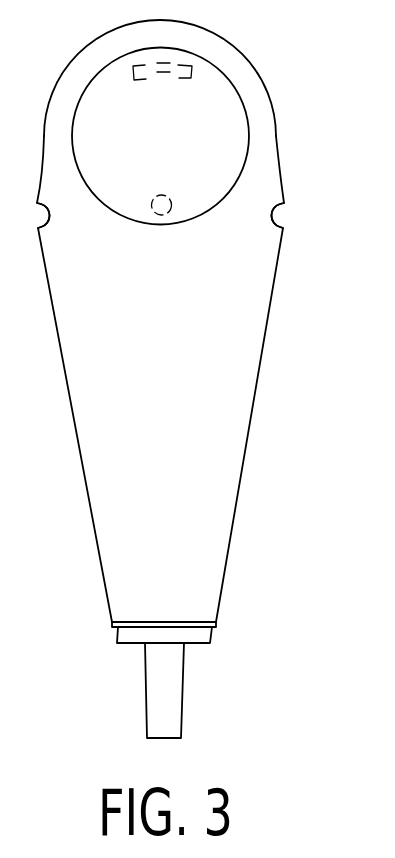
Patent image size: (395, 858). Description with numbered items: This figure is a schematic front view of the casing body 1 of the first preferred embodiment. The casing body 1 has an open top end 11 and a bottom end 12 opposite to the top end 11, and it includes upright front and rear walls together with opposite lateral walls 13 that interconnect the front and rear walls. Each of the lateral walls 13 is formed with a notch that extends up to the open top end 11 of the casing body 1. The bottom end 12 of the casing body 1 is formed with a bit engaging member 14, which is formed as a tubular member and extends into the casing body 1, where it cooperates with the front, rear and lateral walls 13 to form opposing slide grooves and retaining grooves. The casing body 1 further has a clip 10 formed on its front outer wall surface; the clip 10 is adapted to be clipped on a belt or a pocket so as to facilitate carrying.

The casing body 1 is at (188, 375).
The clip 10 is at (230, 132).
The open top end 11 is at (260, 70).
The bottom end 12 is at (186, 644).
The lateral walls 13 is at (278, 213).
The bit engaging member 14 is at (177, 700).